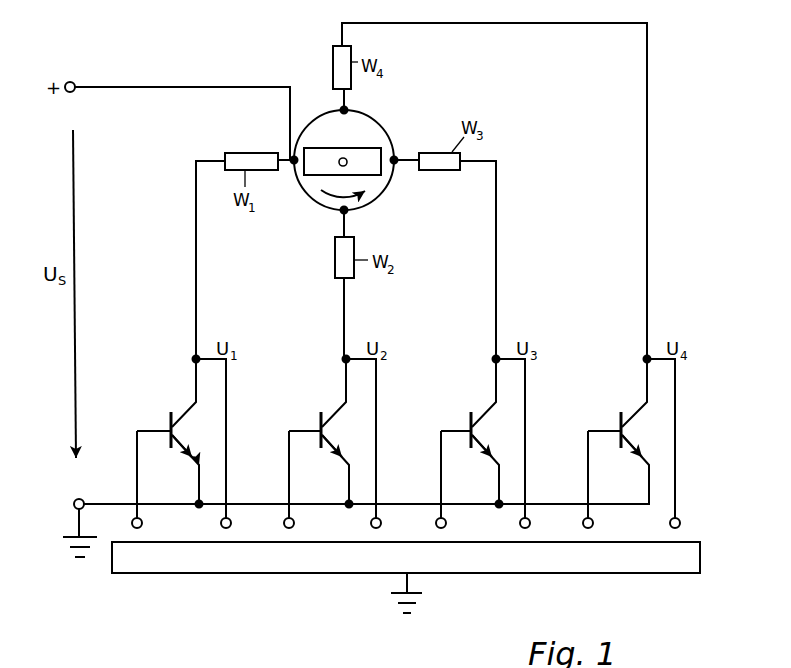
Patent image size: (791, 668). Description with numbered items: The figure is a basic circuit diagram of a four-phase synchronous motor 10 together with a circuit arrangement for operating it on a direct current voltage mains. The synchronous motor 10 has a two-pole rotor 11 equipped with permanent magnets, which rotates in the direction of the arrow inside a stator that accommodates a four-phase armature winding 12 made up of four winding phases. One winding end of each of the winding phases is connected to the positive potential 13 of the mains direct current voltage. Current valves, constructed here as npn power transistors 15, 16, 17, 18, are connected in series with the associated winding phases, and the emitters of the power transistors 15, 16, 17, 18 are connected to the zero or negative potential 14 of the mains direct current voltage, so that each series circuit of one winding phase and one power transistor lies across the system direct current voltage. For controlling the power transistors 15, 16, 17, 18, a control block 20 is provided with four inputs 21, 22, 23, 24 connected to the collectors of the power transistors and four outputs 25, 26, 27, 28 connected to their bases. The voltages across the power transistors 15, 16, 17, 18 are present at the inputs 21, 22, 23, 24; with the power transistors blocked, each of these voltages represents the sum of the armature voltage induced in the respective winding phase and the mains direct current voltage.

The synchronous motor 10 is at (394, 108).
The two-pole rotor 11 is at (335, 147).
The four-phase armature winding 12 is at (381, 206).
The positive potential 13 is at (73, 81).
The zero or negative potential 14 is at (84, 497).
The power transistor 15 is at (173, 430).
The power transistor 16 is at (323, 424).
The power transistor 17 is at (473, 424).
The power transistor 18 is at (623, 432).
The control block 20 is at (327, 565).
The input 21 is at (224, 528).
The input 22 is at (374, 528).
The input 23 is at (524, 528).
The input 24 is at (674, 528).
The output 25 is at (136, 528).
The output 26 is at (288, 528).
The output 27 is at (441, 528).
The output 28 is at (587, 528).